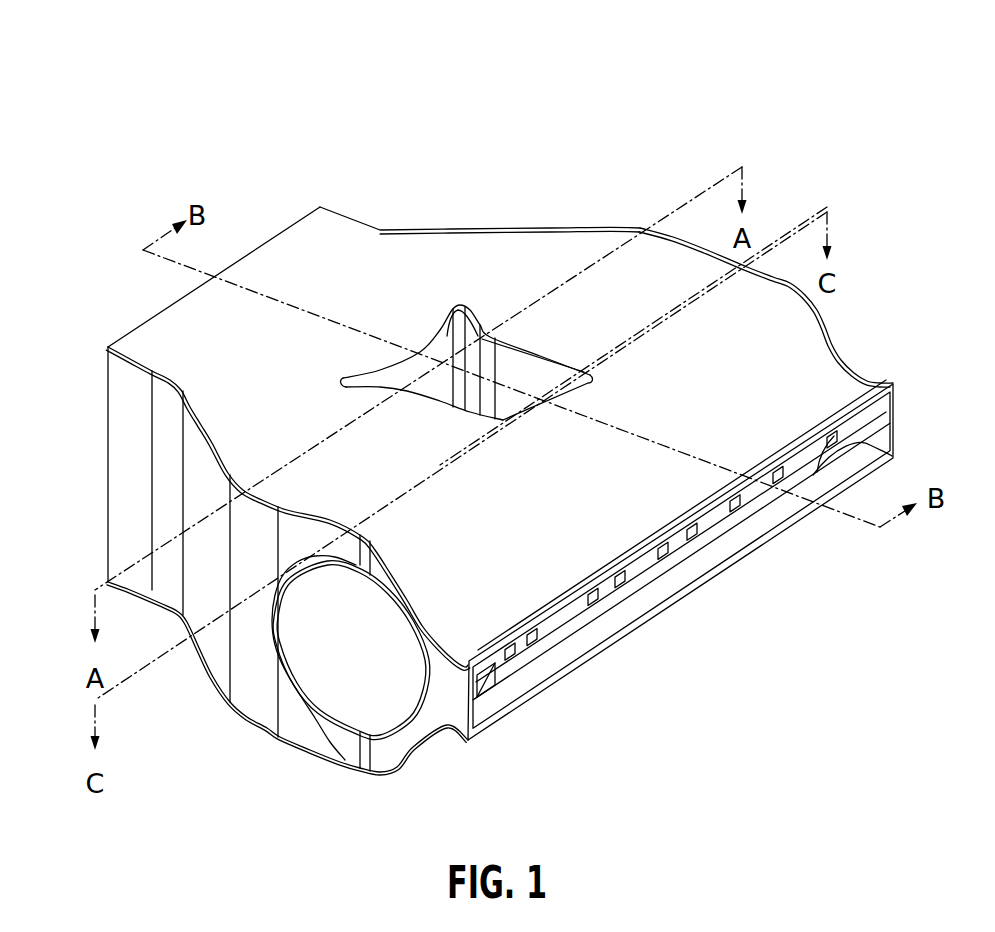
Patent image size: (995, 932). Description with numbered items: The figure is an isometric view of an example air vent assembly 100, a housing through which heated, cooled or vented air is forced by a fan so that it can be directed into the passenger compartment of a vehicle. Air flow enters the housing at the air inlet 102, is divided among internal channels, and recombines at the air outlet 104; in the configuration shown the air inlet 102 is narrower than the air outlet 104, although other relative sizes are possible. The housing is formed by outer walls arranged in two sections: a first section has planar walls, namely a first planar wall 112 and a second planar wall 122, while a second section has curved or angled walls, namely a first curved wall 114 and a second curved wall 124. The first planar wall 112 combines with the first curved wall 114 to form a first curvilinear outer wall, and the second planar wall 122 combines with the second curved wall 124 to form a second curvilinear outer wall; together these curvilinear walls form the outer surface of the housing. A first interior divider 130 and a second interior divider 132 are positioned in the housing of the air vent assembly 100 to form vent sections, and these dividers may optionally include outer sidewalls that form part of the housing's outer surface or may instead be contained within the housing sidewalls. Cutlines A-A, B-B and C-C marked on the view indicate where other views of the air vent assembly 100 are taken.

The air vent assembly 100 is at (778, 82).
The air inlet 102 is at (138, 327).
The air outlet 104 is at (632, 597).
The first planar wall 112 is at (125, 408).
The first curved wall 114 is at (222, 653).
The second planar wall 122 is at (575, 253).
The second curved wall 124 is at (810, 338).
The first interior divider 130 is at (347, 693).
The second interior divider 132 is at (467, 327).